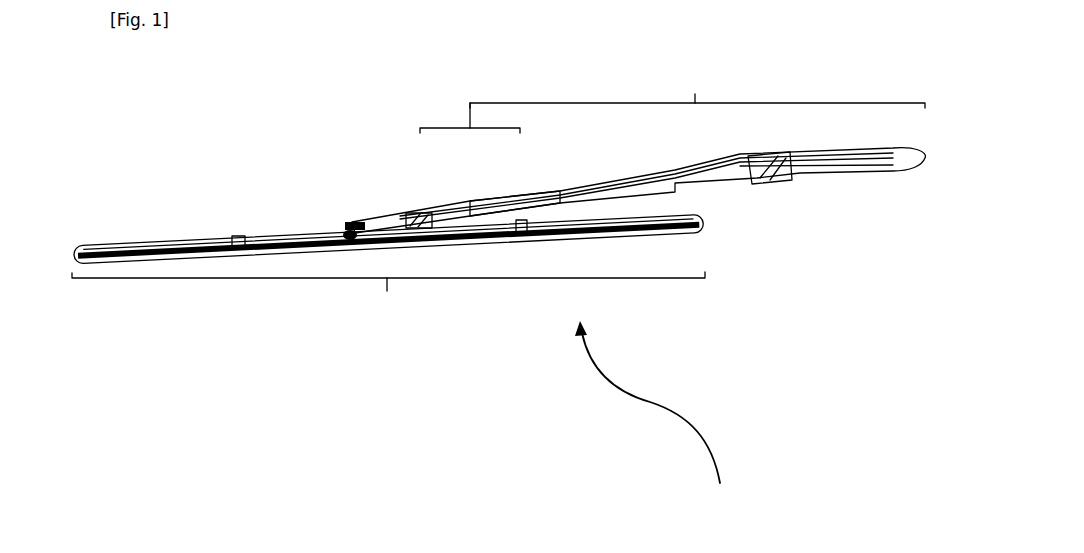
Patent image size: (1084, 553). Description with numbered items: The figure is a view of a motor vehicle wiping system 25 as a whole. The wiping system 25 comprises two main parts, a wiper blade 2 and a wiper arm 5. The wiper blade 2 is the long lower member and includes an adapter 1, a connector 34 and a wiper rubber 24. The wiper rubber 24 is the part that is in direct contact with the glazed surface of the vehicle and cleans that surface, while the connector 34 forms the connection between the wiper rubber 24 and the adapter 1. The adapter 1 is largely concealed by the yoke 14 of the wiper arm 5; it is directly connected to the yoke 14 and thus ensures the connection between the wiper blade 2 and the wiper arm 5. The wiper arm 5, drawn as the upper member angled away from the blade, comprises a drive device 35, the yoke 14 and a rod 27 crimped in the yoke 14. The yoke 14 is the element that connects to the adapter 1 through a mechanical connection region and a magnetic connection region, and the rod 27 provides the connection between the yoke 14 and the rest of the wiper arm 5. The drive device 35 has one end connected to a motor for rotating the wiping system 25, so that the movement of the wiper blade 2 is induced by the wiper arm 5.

The adapter 1 is at (354, 229).
The wiper blade 2 is at (388, 265).
The wiper arm 5 is at (638, 150).
The yoke 14 is at (393, 217).
The wiper rubber 24 is at (178, 255).
The wiping system 25 is at (653, 419).
The rod 27 is at (472, 212).
The connector 34 is at (352, 235).
The drive device 35 is at (838, 170).